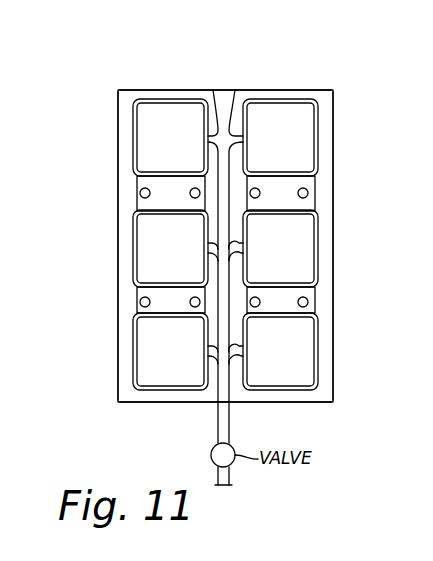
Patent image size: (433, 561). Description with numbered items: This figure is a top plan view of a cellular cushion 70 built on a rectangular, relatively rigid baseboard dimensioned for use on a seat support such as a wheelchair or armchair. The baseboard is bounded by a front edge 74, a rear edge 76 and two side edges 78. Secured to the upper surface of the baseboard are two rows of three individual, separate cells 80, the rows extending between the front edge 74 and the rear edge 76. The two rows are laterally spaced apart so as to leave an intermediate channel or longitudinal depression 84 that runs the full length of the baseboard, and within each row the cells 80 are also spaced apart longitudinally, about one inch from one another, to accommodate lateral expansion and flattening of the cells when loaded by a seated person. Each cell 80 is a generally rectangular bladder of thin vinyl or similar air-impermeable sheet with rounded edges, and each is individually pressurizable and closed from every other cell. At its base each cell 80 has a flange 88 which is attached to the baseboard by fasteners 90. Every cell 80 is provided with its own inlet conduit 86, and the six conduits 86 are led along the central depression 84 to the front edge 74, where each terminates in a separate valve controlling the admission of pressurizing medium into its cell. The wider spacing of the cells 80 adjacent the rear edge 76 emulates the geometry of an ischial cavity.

The cellular cushion 70 is at (121, 62).
The front edge 74 is at (146, 89).
The rear edge 76 is at (166, 403).
The side edges 78 is at (334, 221).
The cells 80 is at (132, 124).
The longitudinal depression 84 is at (225, 122).
The inlet conduit 86 is at (215, 134).
The flange 88 is at (136, 204).
The fasteners 90 is at (190, 193).